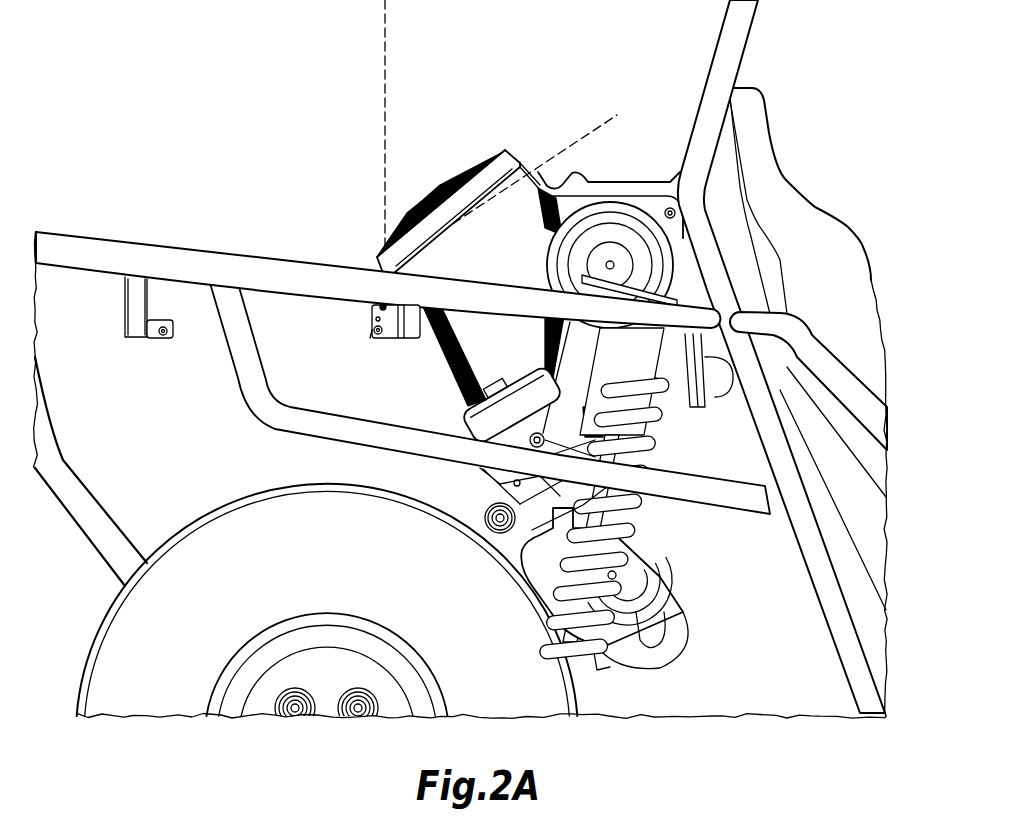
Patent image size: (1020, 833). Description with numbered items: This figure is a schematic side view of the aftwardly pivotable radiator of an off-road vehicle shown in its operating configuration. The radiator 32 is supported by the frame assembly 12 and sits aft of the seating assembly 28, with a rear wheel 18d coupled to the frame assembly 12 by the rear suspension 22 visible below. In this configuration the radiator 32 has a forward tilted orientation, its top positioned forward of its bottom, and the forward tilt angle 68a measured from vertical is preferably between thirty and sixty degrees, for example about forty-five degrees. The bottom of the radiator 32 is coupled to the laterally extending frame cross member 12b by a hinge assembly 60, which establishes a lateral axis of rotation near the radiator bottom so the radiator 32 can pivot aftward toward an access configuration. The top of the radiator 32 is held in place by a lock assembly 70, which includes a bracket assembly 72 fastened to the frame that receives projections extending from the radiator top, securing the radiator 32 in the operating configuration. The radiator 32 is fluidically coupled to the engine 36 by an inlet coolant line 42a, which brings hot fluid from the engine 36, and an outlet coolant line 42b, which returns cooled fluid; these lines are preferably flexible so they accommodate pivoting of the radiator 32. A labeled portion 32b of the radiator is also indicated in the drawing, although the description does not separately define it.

The frame assembly 12 is at (78, 247).
The frame cross member 12b is at (407, 333).
The rear wheel 18d is at (208, 533).
The rear suspension 22 is at (608, 548).
The seating assembly 28 is at (778, 137).
The radiator 32 is at (533, 160).
The actuator housing 32b is at (463, 177).
The engine 36 is at (480, 420).
The inlet coolant line 42a is at (547, 350).
The outlet coolant line 42b is at (450, 370).
The hinge assembly 60 is at (357, 338).
The forward tilt angle 68a is at (385, 5).
The lock assembly 70 is at (642, 180).
The bracket assembly 72 is at (575, 173).